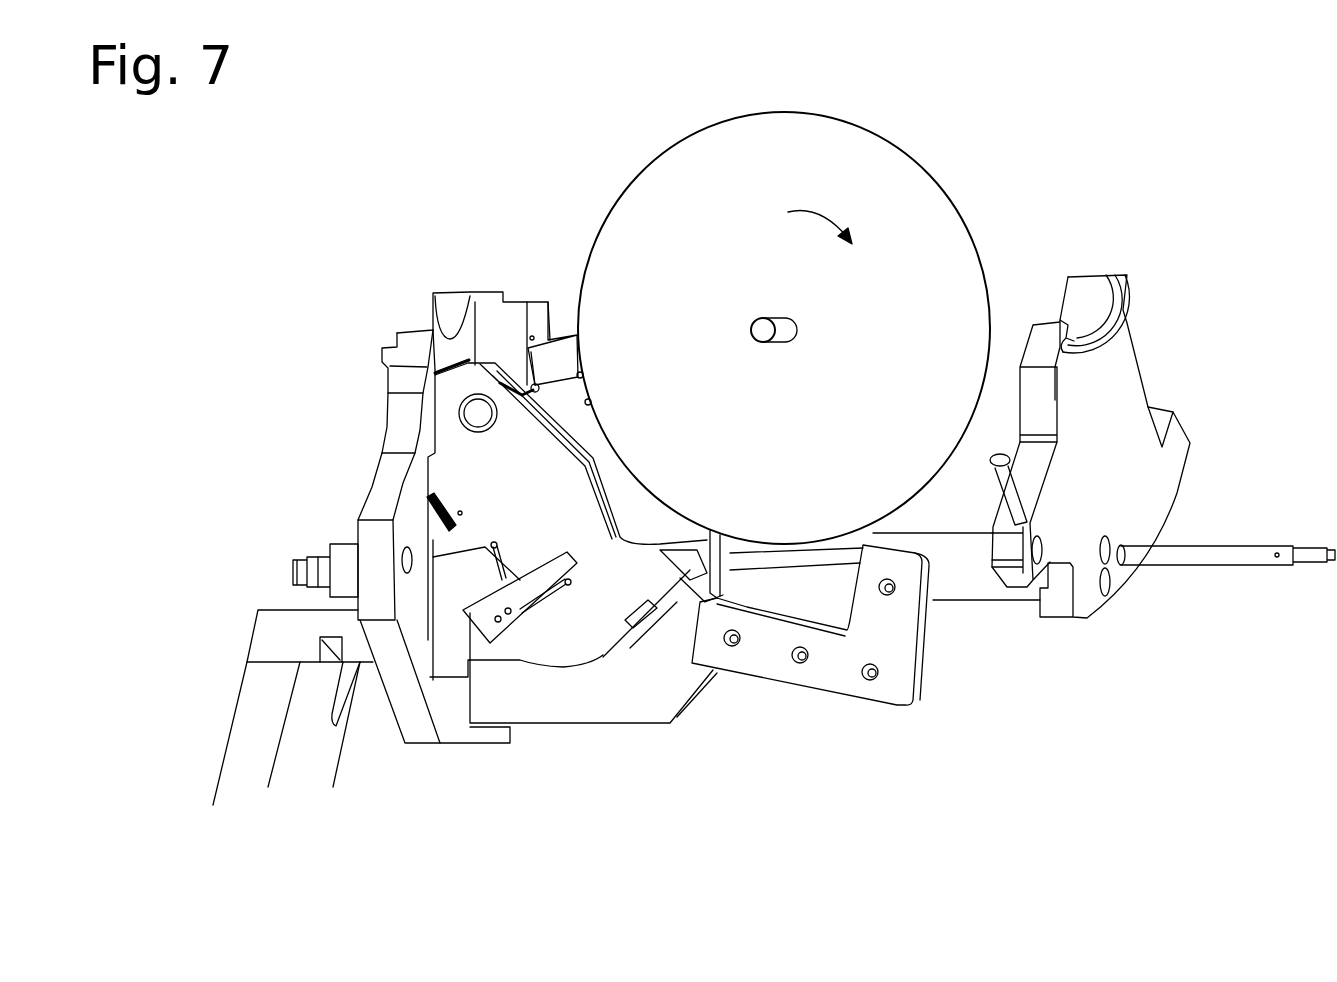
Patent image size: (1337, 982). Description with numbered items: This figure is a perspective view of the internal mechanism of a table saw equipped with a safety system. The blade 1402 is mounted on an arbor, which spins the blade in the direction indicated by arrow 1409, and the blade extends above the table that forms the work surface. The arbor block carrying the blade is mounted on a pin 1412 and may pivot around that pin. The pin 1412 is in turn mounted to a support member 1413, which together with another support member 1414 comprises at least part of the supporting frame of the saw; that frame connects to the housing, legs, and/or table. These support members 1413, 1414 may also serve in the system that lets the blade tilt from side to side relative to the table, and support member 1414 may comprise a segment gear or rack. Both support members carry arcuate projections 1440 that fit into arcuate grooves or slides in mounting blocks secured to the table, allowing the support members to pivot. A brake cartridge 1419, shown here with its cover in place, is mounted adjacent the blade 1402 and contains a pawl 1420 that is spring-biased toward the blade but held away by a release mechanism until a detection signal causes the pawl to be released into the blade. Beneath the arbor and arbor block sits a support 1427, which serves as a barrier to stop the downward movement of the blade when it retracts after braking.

The blade 1402 is at (875, 153).
The arrow 1409 is at (817, 215).
The arcuate projections 1440 is at (382, 348).
The support member 1413 is at (417, 728).
The brake cartridge 1419 is at (572, 543).
The pawl 1420 is at (622, 511).
The pin 1412 is at (470, 417).
The support 1427 is at (970, 588).
The support member 1414 is at (1125, 378).